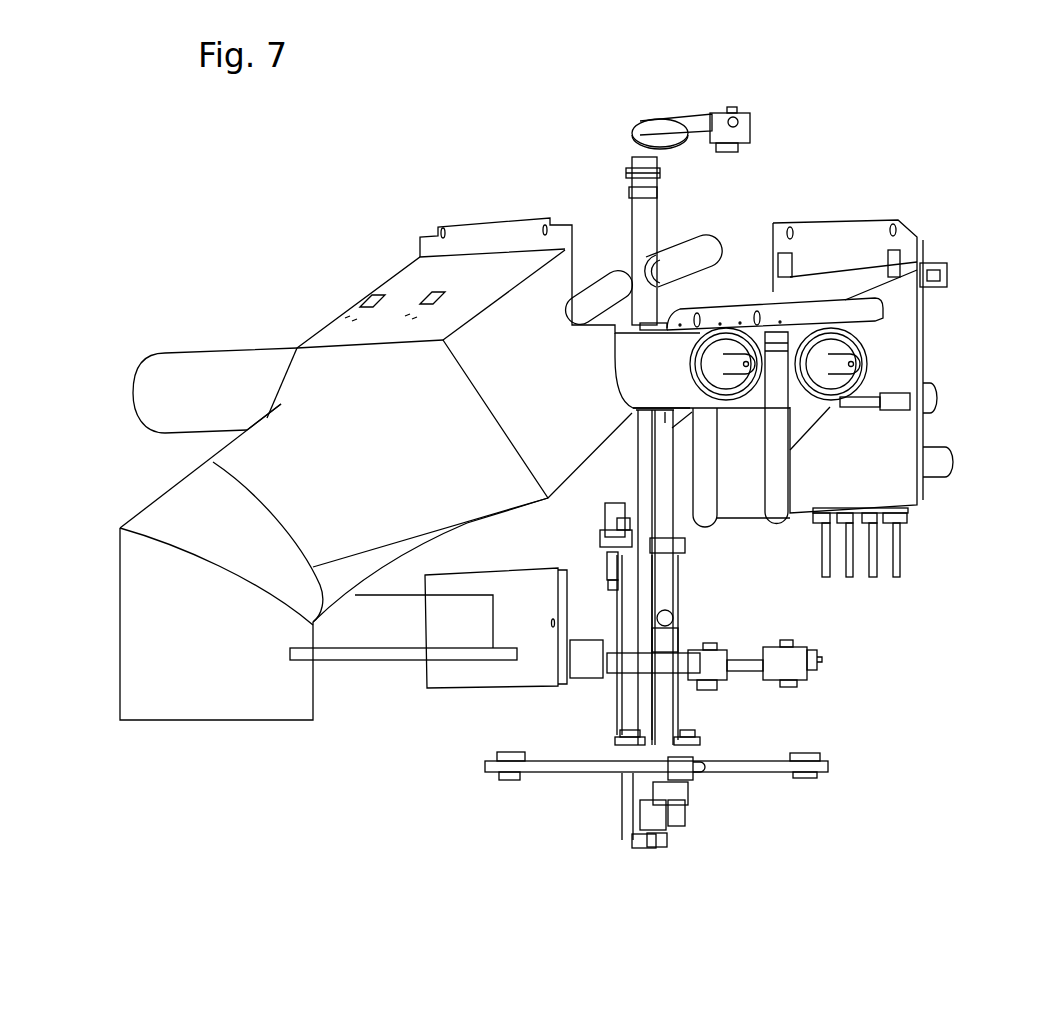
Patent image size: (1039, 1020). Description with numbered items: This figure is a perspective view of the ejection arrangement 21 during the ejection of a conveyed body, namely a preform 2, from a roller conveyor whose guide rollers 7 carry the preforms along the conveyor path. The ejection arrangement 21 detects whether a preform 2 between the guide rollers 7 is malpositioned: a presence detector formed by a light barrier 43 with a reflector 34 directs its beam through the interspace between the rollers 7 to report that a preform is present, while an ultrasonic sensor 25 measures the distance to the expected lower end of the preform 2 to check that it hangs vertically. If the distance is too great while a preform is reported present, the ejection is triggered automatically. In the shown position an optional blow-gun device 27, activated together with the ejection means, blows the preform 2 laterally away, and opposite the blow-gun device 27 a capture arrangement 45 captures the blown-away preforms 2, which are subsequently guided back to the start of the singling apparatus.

The guide roller 7 is at (208, 373).
The capture arrangement 45 is at (408, 290).
The preform 2 is at (600, 290).
The reflector 34 is at (655, 122).
The blow-gun device 27 is at (780, 311).
The ultrasonic sensor 25 is at (612, 516).
The ejection arrangement 21 is at (665, 497).
The light barrier 43 is at (792, 668).